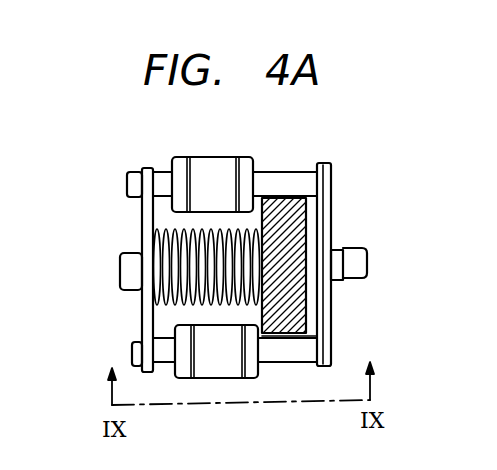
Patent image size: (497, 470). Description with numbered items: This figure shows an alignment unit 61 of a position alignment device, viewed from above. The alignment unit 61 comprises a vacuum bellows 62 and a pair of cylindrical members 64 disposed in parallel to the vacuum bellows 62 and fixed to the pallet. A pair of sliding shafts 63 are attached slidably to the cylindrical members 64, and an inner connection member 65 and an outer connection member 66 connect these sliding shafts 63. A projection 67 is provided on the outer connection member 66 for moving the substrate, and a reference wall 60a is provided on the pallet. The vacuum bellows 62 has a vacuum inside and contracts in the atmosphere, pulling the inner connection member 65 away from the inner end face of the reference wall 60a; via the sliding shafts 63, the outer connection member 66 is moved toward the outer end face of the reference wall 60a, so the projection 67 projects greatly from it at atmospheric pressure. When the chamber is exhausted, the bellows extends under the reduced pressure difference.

The alignment unit 61 is at (108, 352).
The vacuum bellows 62 is at (157, 243).
The sliding shafts 63 is at (287, 168).
The cylindrical members 64 is at (207, 168).
The inner connection member 65 is at (142, 213).
The outer connection member 66 is at (333, 257).
The projection 67 is at (358, 268).
The reference wall 60a is at (293, 312).